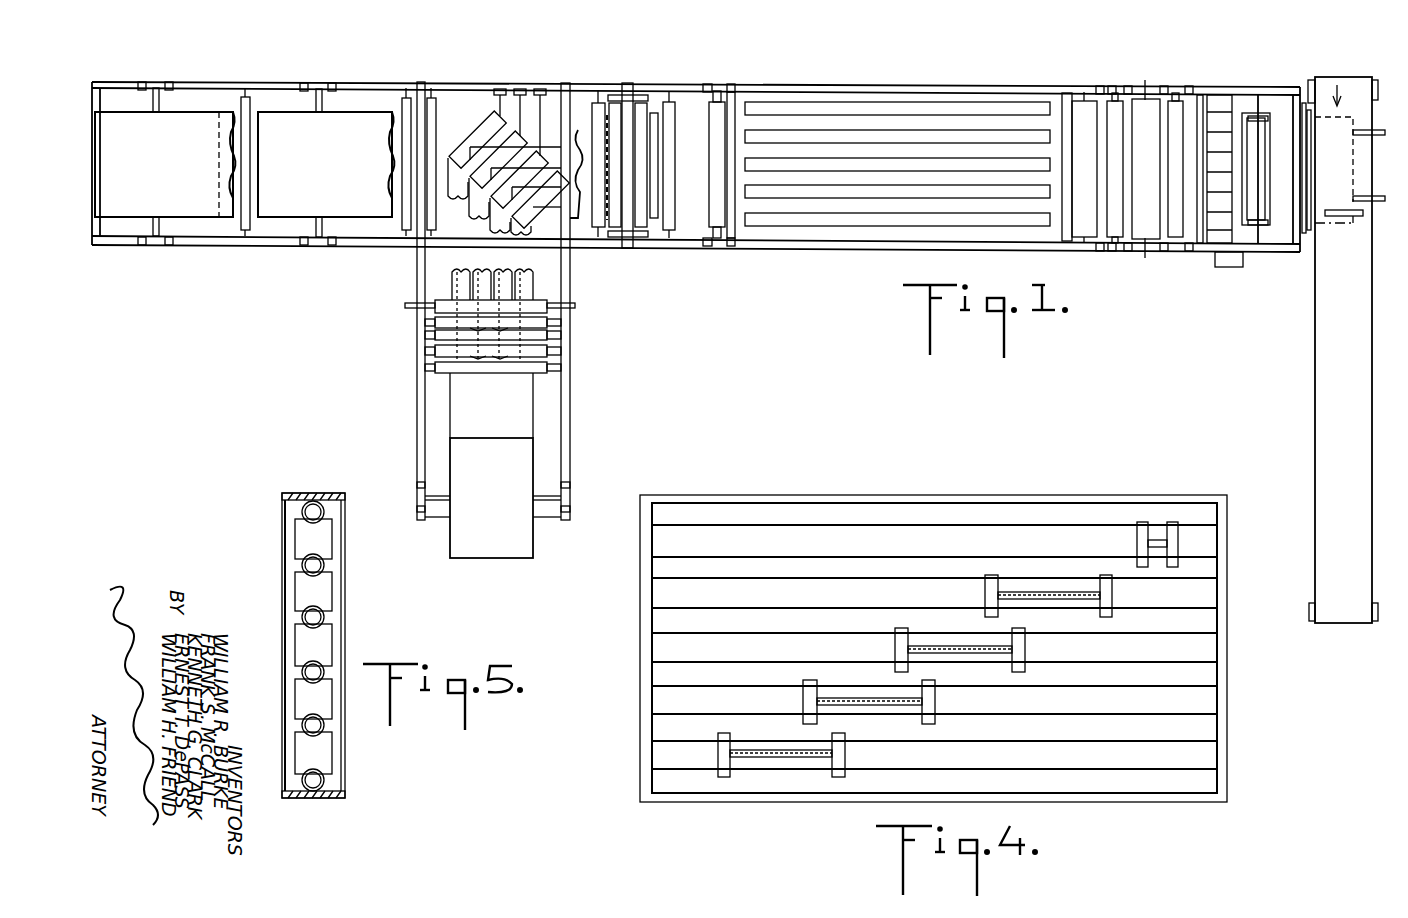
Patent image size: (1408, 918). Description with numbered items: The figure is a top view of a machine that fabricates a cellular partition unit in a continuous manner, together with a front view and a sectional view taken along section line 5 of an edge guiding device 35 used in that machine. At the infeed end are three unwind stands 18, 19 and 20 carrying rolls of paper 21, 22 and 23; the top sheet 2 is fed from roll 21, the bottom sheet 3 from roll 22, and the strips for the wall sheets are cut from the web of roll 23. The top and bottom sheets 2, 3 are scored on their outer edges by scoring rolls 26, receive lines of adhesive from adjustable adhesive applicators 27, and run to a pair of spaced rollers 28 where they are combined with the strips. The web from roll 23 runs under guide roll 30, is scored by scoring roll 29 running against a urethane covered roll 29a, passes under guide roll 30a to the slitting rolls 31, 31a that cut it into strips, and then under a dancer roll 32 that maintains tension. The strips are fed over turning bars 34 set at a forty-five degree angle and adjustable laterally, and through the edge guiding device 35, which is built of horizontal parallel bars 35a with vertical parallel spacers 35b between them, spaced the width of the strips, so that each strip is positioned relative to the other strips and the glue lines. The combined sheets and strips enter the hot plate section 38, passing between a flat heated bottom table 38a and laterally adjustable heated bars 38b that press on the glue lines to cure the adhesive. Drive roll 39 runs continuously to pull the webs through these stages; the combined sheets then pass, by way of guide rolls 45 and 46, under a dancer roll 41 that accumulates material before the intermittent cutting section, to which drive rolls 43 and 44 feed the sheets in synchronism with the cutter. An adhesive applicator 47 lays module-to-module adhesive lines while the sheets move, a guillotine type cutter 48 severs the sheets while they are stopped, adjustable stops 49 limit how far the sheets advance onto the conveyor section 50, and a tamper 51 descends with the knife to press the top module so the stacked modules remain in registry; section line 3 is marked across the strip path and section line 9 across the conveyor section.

In FIG. 1, the top sheet 2 is at (128, 227).
In FIG. 1, the bottom sheet 3 is at (550, 84).
In FIG. 4, the section line 5- 5 is at (698, 518).
In FIG. 1, the section line 9- 9 is at (1374, 113).
In FIG. 1, the unwind stand 18 is at (158, 81).
In FIG. 1, the unwind stand 19 is at (320, 81).
In FIG. 1, the unwind stand 20 is at (415, 500).
In FIG. 1, the roll of paper 21 is at (182, 230).
In FIG. 1, the roll of paper 22 is at (282, 230).
In FIG. 1, the roll of paper 23 is at (482, 540).
In FIG. 1, the scoring rolls 26 is at (652, 112).
In FIG. 1, the adhesive applicators 27 is at (594, 108).
In FIG. 1, the spaced rollers 28 is at (735, 110).
In FIG. 1, the scoring roll 29 is at (498, 365).
In FIG. 1, the urethane covered roll 29a is at (440, 350).
In FIG. 1, the guide roll 30 is at (440, 367).
In FIG. 1, the guide roll 30a is at (440, 336).
In FIG. 1, the slitting roll 31 is at (512, 314).
In FIG. 1, the slitting roll 31a is at (438, 321).
In FIG. 1, the dancer roll 32 is at (440, 300).
In FIG. 1, the turning bars 34 is at (492, 112).
In FIG. 1, the edge guiding device 35 is at (668, 112).
In FIG. 4, the edge guiding device 35 is at (958, 492).
In FIG. 5, the edge guiding device 35 is at (348, 626).
In FIG. 4, the horizontal parallel bars 35a is at (1178, 676).
In FIG. 5, the horizontal parallel bars 35a is at (298, 508).
In FIG. 4, the vertical parallel spacers 35b is at (985, 596).
In FIG. 5, the vertical parallel spacers 35b is at (305, 612).
In FIG. 1, the hot plate section 38 is at (902, 110).
In FIG. 1, the heated bottom table 38a is at (738, 210).
In FIG. 1, the heated bars 38b is at (800, 195).
In FIG. 1, the drive roll 39 is at (1078, 112).
In FIG. 1, the dancer roll 41 is at (1146, 112).
In FIG. 1, the drive roll 43 is at (1252, 226).
In FIG. 1, the drive roll 44 is at (1268, 208).
In FIG. 1, the guide roll 45 is at (1112, 112).
In FIG. 1, the guide roll 46 is at (1180, 112).
In FIG. 1, the adhesive applicator 47 is at (1220, 115).
In FIG. 1, the guillotine type cutter 48 is at (1310, 82).
In FIG. 1, the adjustable stops 49 is at (1370, 136).
In FIG. 1, the conveyor section 50 is at (1340, 72).
In FIG. 1, the tamper 51 is at (1347, 222).